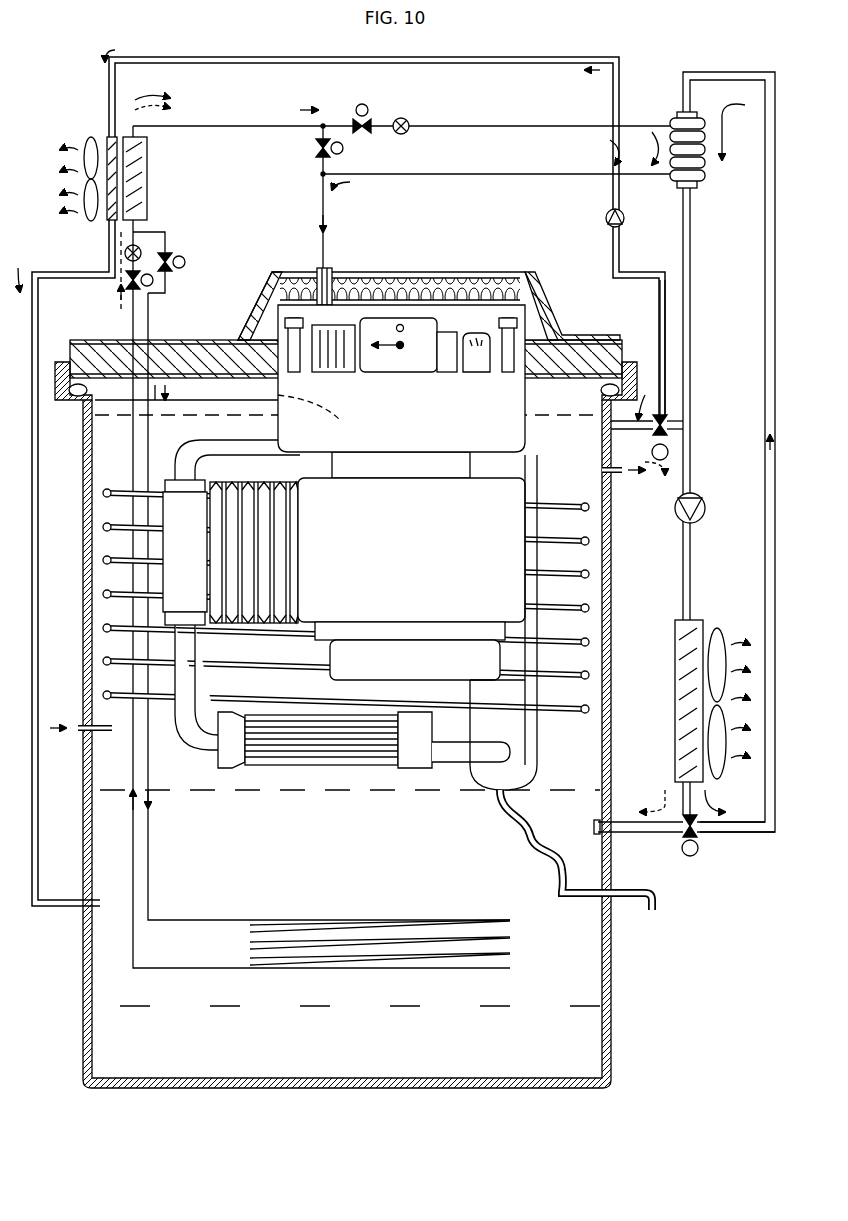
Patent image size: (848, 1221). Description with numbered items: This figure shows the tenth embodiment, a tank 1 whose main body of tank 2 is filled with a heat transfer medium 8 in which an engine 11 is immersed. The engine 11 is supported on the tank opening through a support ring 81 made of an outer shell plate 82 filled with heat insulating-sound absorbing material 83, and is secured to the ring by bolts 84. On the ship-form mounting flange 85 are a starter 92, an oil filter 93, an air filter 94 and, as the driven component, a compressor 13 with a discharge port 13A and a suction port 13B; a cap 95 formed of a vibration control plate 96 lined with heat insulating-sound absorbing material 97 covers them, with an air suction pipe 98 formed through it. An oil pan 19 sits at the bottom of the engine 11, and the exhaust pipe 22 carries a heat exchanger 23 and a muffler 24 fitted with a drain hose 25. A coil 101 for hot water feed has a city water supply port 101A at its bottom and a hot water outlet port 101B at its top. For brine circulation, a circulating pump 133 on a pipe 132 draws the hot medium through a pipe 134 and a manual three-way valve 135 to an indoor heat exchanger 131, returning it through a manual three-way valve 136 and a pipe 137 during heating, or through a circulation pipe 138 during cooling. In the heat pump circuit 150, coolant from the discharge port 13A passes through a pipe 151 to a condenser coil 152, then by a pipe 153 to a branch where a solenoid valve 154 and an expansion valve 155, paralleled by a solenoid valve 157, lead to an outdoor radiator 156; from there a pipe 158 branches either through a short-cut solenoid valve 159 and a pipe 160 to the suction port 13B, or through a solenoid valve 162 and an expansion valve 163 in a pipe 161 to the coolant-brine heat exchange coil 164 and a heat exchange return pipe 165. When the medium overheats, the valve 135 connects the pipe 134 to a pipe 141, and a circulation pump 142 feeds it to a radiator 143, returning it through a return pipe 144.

The tank 1 is at (614, 962).
The main body of tank 2 is at (611, 997).
The heat transfer medium 8 is at (600, 1040).
The engine 11 is at (298, 557).
The compressor 13 is at (405, 375).
The discharge port 13A is at (398, 333).
The suction port 13B is at (404, 350).
The oil pan 19 is at (490, 680).
The exhaust pipe 22 is at (592, 526).
The heat exchanger 23 is at (336, 770).
The muffler 24 is at (538, 748).
The drain hose 25 is at (534, 865).
The support ring 81 is at (232, 293).
The outer shell plate 82 is at (226, 340).
The heat insulating-sound absorbing material 83 is at (196, 340).
The bolts 84 is at (512, 375).
The mounting flange 85 is at (280, 397).
The starter 92 is at (450, 375).
The oil filter 93 is at (478, 375).
The air filter 94 is at (345, 375).
The cap 95 is at (474, 230).
The vibration control plate 96 is at (421, 285).
The heat insulating-sound absorbing material 97 is at (456, 285).
The air suction pipe 98 is at (334, 270).
The coil for hot water feed 101 is at (104, 593).
The city water supply port 101A is at (80, 733).
The hot water outlet port 101B is at (610, 472).
The indoor heat exchanger 131 is at (676, 620).
The pipe 132 is at (694, 305).
The circulating pump 133 is at (700, 496).
The pipe of the high temperature portion 134 is at (630, 431).
The manual three-way valve 135 is at (670, 420).
The manual three-way valve 136 is at (690, 857).
The pipe of the low temperature portion 137 is at (636, 834).
The circulation pipe 138 is at (762, 230).
The pipe for heat radiation 141 is at (660, 275).
The circulation pump 142 is at (606, 218).
The radiator 143 is at (110, 137).
The return pipe 144 is at (40, 440).
The heat pump circuit 150 is at (457, 120).
The pipe 151 is at (150, 847).
The condenser coil 152 is at (390, 925).
The pipe 153 is at (133, 958).
The solenoid valve 154 is at (142, 278).
The expansion valve 155 is at (140, 247).
The outdoor radiator 156 is at (147, 163).
The solenoid valve 157 is at (174, 262).
The pipe 158 is at (236, 126).
The solenoid valve 159 is at (344, 148).
The pipe 160 is at (322, 204).
The pipe 161 is at (534, 126).
The solenoid valve 162 is at (358, 104).
The expansion valve 163 is at (401, 118).
The coolant-brine heat exchange coil 164 is at (700, 118).
The heat exchange return pipe 165 is at (492, 174).